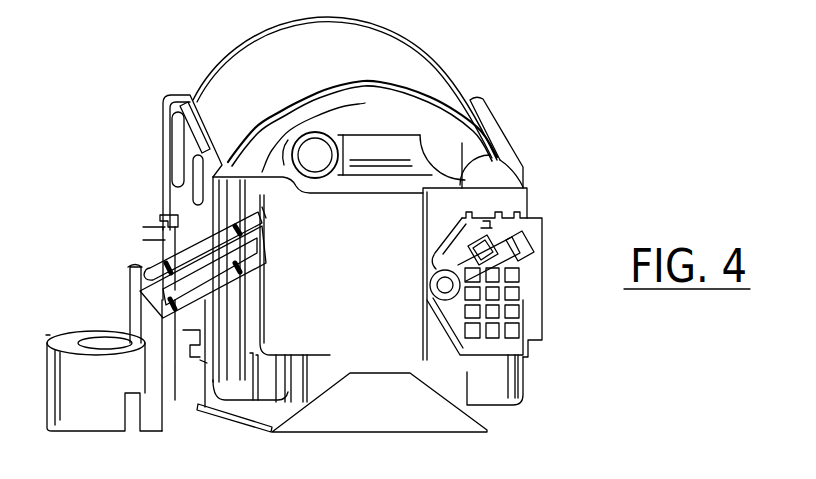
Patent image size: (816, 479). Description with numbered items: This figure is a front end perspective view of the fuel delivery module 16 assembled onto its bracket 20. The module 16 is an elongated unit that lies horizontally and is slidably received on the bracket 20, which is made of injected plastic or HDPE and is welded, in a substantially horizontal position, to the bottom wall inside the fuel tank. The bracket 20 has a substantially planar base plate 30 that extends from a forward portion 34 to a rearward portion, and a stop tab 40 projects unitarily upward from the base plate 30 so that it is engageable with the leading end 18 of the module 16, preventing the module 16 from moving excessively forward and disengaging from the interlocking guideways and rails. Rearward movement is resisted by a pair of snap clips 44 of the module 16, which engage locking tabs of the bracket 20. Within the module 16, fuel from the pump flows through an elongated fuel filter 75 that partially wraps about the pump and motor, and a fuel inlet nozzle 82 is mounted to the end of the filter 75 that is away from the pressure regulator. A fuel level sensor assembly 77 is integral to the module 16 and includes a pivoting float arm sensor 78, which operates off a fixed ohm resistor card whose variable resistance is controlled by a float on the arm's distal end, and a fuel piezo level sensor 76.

The fuel delivery module 16 is at (469, 79).
The fuel filter 75 is at (428, 56).
The fuel inlet nozzle 82 is at (318, 150).
The leading end 18 is at (507, 380).
The pivoting float arm sensor 78 is at (538, 284).
The fuel level sensor assembly 77 is at (548, 240).
The snap clips 44 is at (160, 240).
The fuel piezo level sensor 76 is at (108, 428).
The bracket 20 is at (213, 420).
The base plate 30 is at (287, 412).
The forward portion 34 is at (265, 415).
The stop tab 40 is at (397, 410).